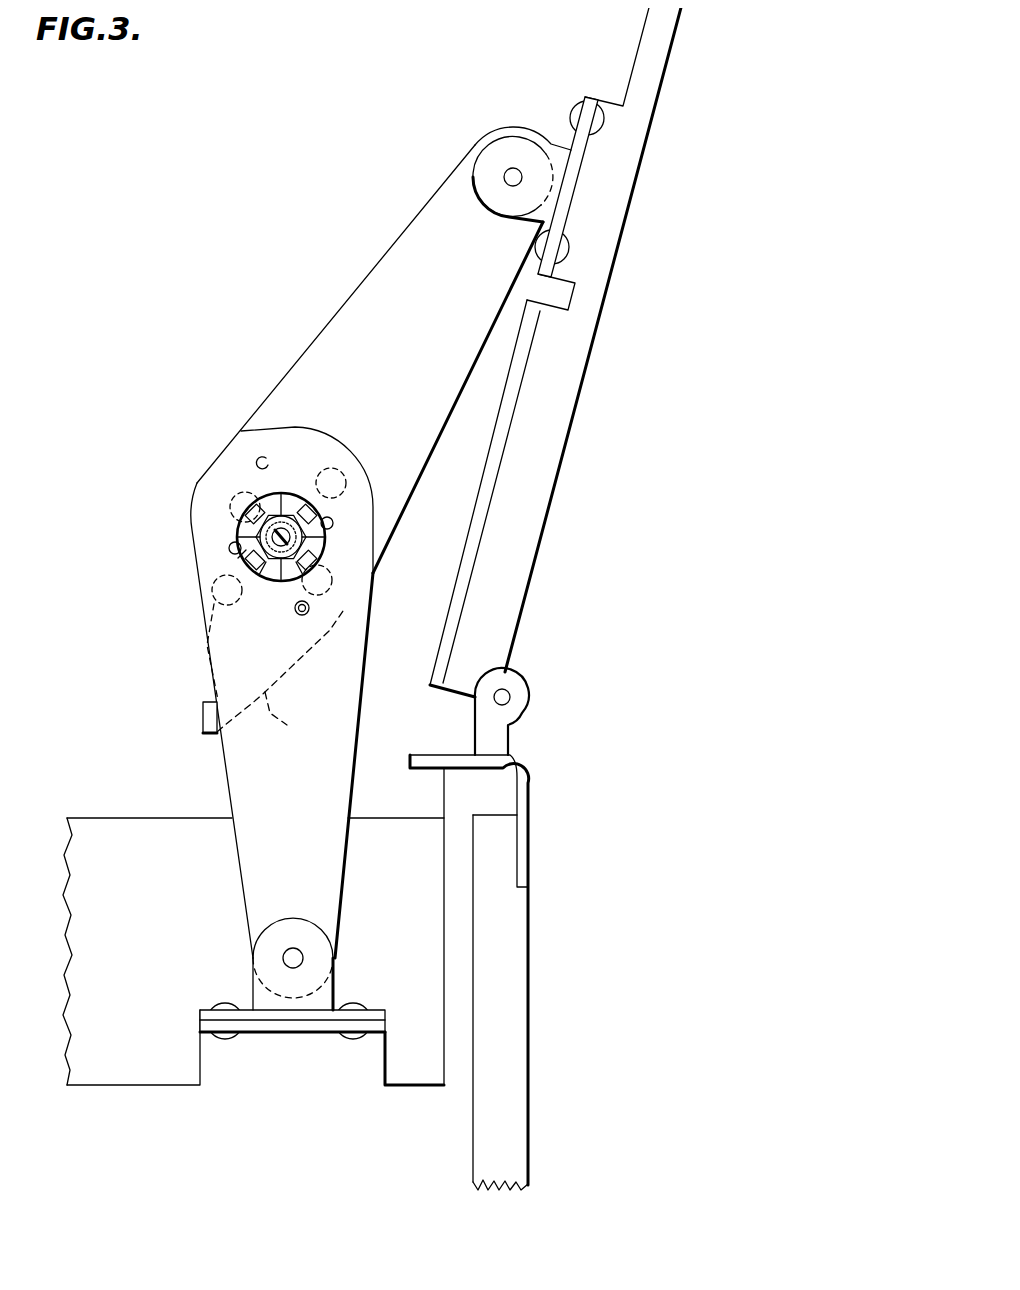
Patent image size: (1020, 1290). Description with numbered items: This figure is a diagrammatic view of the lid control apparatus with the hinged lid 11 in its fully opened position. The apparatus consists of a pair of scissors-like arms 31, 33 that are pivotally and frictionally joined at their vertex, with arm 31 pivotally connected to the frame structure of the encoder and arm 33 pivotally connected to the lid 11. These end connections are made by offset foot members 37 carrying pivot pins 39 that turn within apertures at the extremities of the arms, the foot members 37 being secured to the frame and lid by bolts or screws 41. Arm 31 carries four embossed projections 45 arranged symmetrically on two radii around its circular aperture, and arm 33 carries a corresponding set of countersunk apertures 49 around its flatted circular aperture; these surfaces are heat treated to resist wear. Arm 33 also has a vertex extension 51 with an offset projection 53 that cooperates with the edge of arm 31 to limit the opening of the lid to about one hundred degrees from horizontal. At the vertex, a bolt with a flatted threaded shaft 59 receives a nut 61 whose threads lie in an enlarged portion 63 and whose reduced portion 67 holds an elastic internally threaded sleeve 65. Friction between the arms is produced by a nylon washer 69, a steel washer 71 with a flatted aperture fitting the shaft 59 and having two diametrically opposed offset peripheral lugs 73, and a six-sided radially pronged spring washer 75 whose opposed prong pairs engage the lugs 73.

The hinged lid 11 is at (634, 195).
The arm 31 is at (263, 843).
The arm 33 is at (412, 305).
The offset foot member 37 is at (552, 194).
The pivot pin 39 is at (505, 177).
The bolt or screw 41 is at (574, 116).
The embossed projection 45 is at (259, 460).
The countersunk aperture 49 is at (232, 497).
The vertex extension 51 is at (282, 725).
The offset projection 53 is at (203, 719).
The flatted threaded shaft 59 is at (246, 572).
The nut 61 is at (304, 516).
The enlarged portion 63 is at (274, 513).
The elastic internally threaded sleeve 65 is at (312, 521).
The reduced portion 67 is at (288, 580).
The nylon washer 69 is at (311, 564).
The steel washer 71 is at (265, 578).
The offset peripheral lug 73 is at (243, 510).
The radially pronged spring washer 75 is at (262, 580).